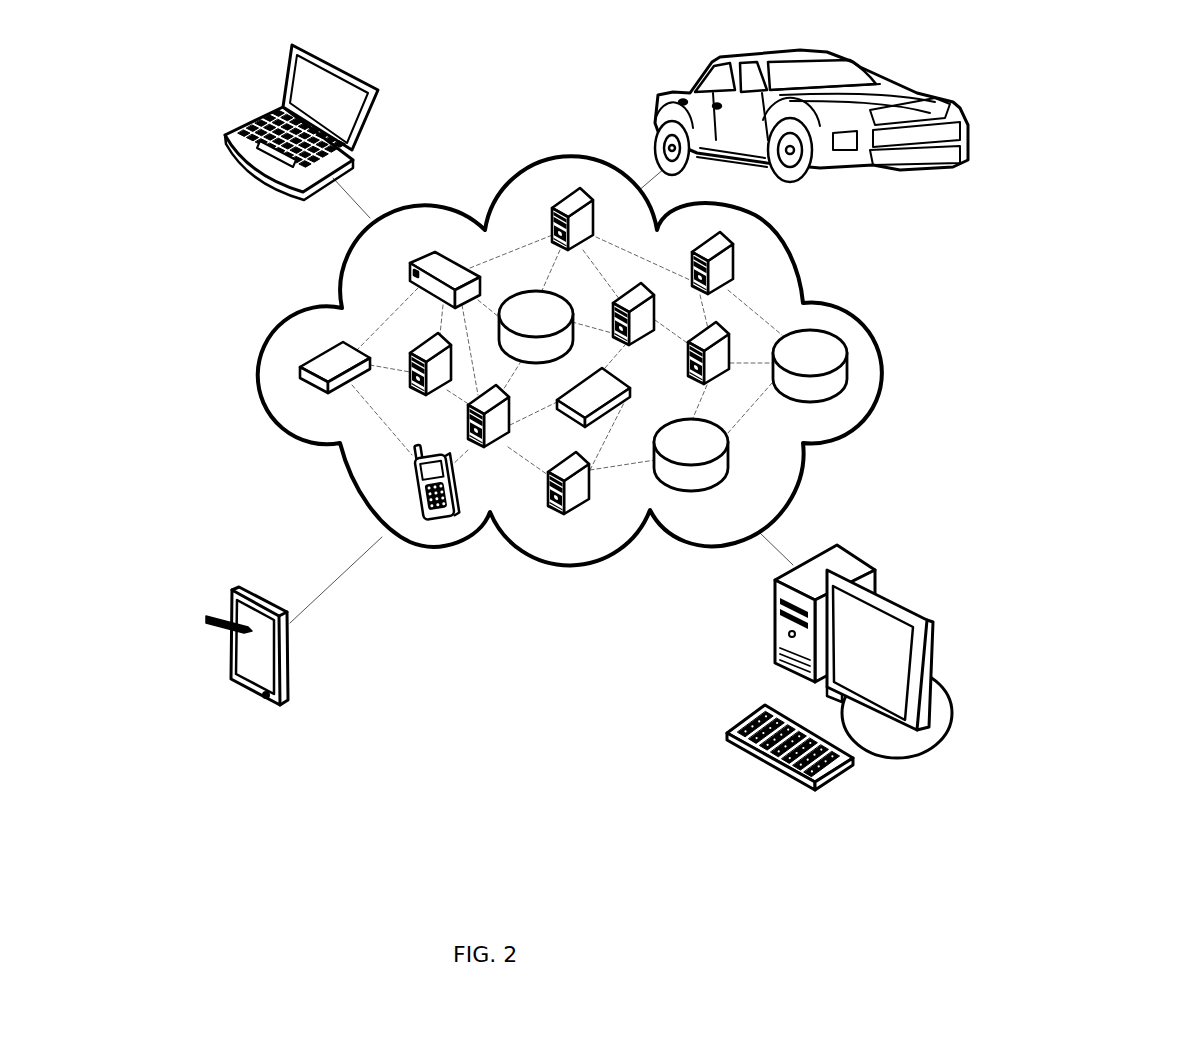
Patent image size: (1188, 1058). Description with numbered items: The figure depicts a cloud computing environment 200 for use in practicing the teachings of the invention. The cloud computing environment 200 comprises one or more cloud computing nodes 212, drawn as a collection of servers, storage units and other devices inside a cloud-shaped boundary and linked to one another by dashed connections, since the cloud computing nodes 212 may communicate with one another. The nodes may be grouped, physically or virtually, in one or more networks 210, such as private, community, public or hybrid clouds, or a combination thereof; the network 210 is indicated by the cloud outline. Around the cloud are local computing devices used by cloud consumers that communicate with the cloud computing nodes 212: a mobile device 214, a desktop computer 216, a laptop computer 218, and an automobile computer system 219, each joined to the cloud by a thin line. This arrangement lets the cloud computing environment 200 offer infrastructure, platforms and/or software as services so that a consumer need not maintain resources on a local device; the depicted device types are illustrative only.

The cloud computing environment 200 is at (655, 436).
The networks 210 is at (557, 567).
The cloud computing nodes 212 is at (496, 475).
The mobile device 214 is at (243, 693).
The desktop computer 216 is at (885, 757).
The laptop computer 218 is at (283, 187).
The automobile computer system 219 is at (900, 170).